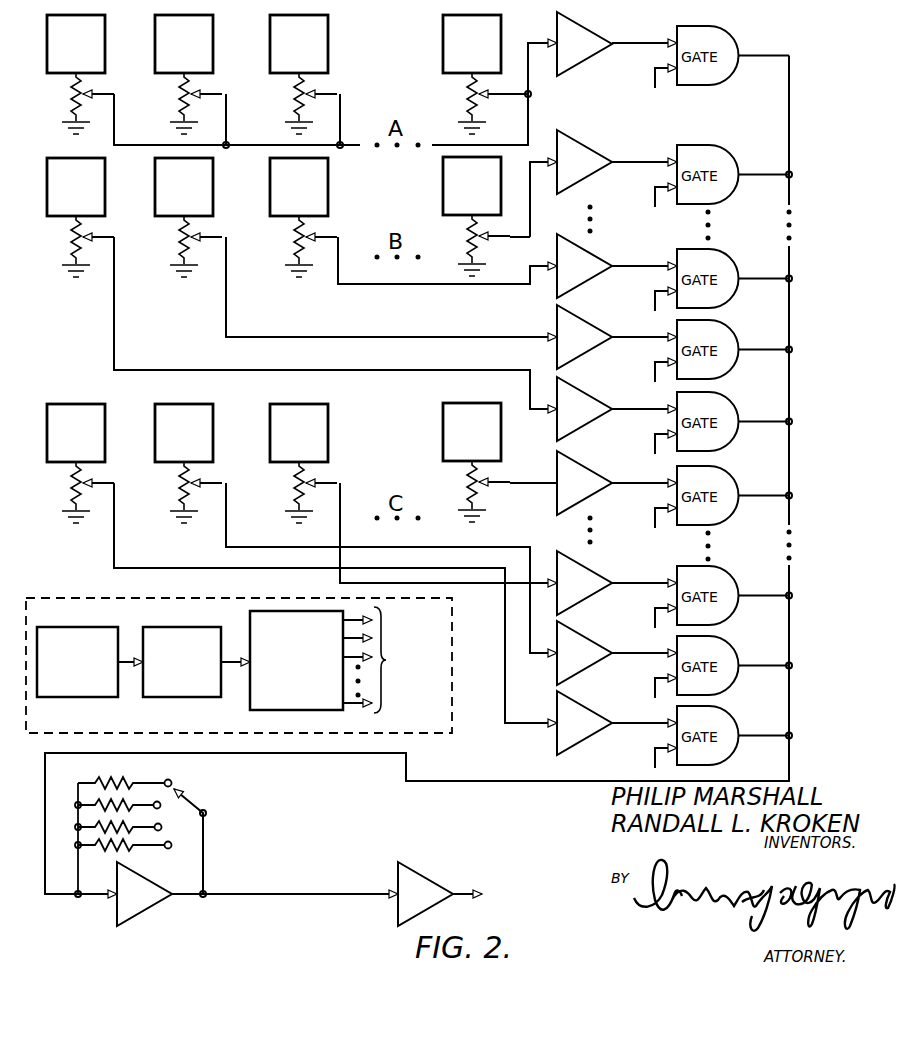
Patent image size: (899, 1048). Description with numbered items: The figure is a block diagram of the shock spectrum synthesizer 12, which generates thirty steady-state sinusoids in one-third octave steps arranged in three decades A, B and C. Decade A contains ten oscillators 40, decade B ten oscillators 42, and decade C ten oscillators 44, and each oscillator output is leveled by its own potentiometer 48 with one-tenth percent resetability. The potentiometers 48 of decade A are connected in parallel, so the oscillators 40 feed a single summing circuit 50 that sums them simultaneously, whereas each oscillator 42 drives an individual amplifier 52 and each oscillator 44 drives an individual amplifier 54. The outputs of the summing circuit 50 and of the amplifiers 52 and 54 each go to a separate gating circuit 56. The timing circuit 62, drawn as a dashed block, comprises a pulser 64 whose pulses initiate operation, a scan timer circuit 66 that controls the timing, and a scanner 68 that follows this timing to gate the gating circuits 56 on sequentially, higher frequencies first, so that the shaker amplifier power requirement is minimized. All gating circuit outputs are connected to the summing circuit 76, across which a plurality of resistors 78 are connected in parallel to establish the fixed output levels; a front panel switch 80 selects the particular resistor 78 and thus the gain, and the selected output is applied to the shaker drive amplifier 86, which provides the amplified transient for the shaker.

The synthesizer 12 is at (851, 414).
The oscillators 40 is at (106, 37).
The oscillators 42 is at (106, 180).
The oscillators 44 is at (106, 427).
The potentiometers 48 is at (72, 97).
The summing circuit 50 is at (584, 26).
The amplifier 52 is at (583, 137).
The amplifier 54 is at (583, 470).
The gating circuits 56 is at (724, 28).
The timing circuit 62 is at (239, 652).
The pulser 64 is at (92, 699).
The scan timer circuit 66 is at (167, 699).
The scanner 68 is at (250, 699).
The summing circuit 76 is at (156, 908).
The resistors 78 is at (116, 822).
The front panel switch 80 is at (192, 806).
The shaker drive amplifier 86 is at (422, 876).